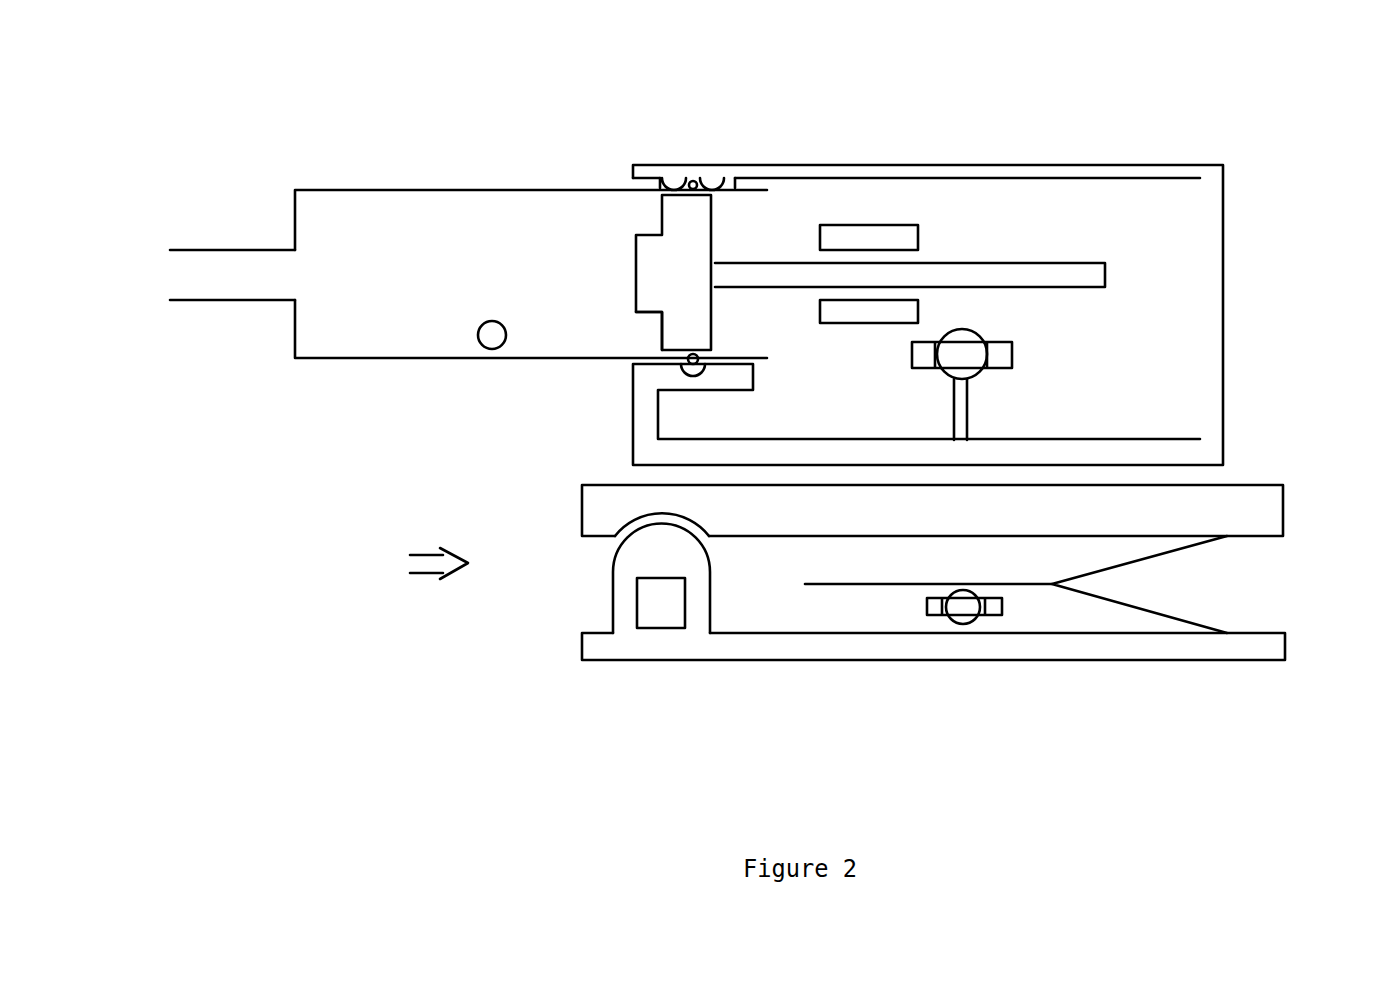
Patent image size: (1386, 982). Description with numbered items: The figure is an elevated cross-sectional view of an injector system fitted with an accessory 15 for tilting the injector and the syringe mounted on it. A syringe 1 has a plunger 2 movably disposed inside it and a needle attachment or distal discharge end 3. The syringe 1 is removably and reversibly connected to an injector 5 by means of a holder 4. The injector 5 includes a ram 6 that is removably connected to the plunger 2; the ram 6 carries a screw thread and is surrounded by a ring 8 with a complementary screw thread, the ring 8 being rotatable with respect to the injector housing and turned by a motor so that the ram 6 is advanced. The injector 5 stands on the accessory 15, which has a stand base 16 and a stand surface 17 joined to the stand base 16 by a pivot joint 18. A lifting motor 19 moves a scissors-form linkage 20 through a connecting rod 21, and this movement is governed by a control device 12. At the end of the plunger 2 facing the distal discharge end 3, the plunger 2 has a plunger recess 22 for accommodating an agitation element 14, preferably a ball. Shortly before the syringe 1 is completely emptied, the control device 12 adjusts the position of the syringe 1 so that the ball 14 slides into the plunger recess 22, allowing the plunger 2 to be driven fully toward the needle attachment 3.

The syringe 1 is at (540, 278).
The plunger 2 is at (680, 230).
The needle attachment or distal discharge end 3 is at (238, 270).
The holder 4 is at (785, 170).
The injector 5 is at (1113, 175).
The ram 6 is at (1090, 275).
The ring 8 is at (875, 232).
The control device 12 is at (657, 608).
The agitation element 14 is at (473, 338).
The accessory 15 is at (417, 566).
The stand base 16 is at (1013, 648).
The stand surface 17 is at (1258, 510).
The pivot joint 18 is at (648, 550).
The lifting motor 19 is at (960, 605).
The linkage 20 is at (1218, 557).
The connecting rod 21 is at (1052, 590).
The plunger recess 22 is at (652, 332).